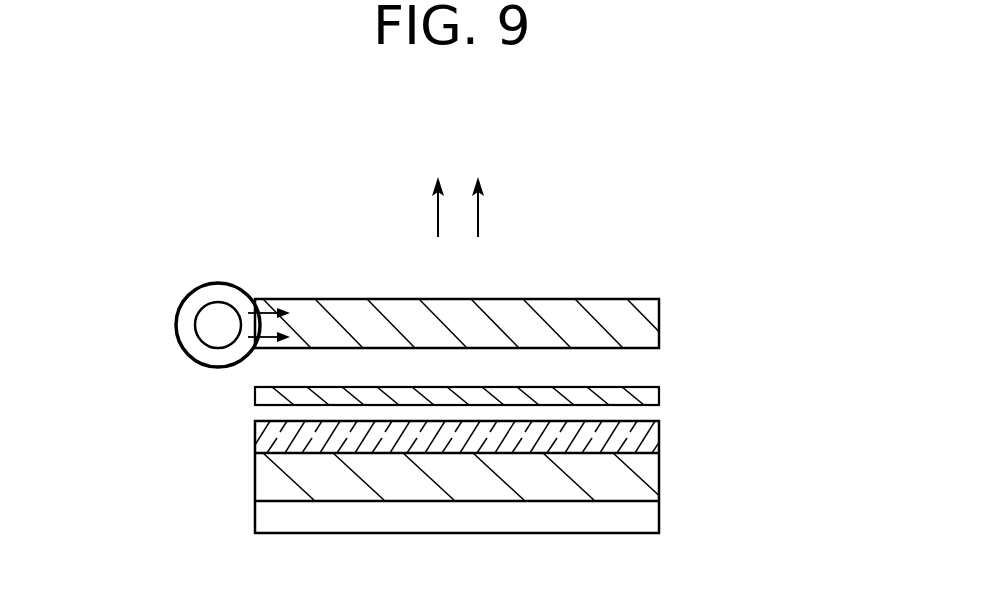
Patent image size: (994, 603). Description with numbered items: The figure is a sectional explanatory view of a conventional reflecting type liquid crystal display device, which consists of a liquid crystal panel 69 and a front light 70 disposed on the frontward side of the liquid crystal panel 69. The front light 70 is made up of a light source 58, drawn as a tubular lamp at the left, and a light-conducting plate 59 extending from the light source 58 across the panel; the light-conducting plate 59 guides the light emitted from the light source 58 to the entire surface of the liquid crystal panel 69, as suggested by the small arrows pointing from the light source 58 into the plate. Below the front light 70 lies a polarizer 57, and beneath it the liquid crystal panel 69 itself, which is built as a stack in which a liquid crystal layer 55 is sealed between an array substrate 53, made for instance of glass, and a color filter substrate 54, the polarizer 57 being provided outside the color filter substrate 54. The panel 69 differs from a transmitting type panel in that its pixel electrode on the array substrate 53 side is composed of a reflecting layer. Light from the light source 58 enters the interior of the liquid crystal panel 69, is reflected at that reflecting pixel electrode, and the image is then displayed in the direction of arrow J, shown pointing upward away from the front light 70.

The front light 70 is at (158, 310).
The light source 58 is at (219, 300).
The light-conducting plate 59 is at (358, 315).
The arrow J is at (480, 217).
The polarizer 57 is at (634, 396).
The liquid crystal panel 69 is at (211, 477).
The color filter substrate 54 is at (643, 442).
The liquid crystal layer 55 is at (645, 475).
The array substrate 53 is at (642, 513).